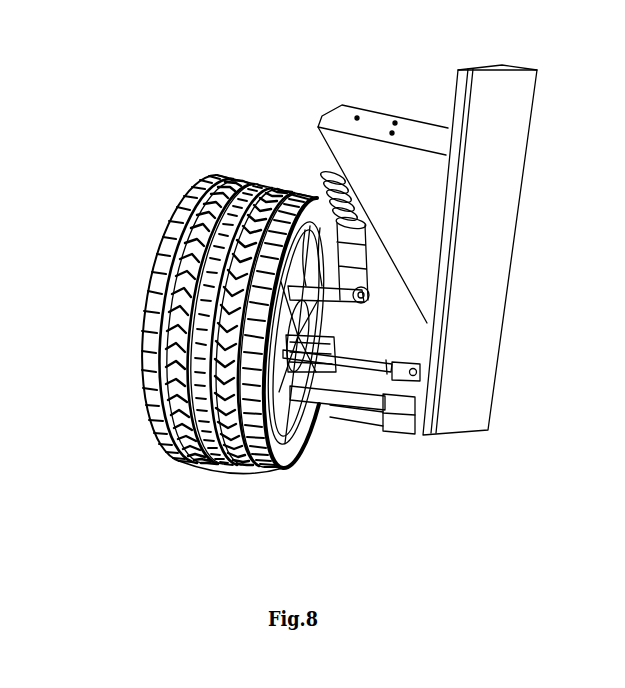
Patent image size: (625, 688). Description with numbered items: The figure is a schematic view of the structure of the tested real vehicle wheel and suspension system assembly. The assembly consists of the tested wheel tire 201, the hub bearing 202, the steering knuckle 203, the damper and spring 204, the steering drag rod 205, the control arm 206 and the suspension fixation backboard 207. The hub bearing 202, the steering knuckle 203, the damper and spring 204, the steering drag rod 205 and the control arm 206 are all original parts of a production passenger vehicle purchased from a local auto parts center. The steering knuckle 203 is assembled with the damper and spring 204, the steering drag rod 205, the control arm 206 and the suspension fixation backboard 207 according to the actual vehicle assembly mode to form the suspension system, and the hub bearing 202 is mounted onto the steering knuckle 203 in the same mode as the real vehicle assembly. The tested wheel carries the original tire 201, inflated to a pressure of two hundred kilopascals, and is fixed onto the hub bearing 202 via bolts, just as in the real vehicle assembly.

The tested wheel tire 201 is at (185, 183).
The hub bearing 202 is at (278, 367).
The steering knuckle 203 is at (250, 180).
The damper and spring 204 is at (330, 188).
The steering drag rod 205 is at (333, 390).
The control arm 206 is at (355, 400).
The suspension fixation backboard 207 is at (433, 147).